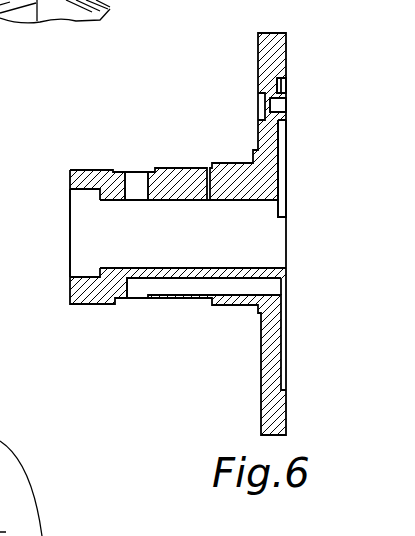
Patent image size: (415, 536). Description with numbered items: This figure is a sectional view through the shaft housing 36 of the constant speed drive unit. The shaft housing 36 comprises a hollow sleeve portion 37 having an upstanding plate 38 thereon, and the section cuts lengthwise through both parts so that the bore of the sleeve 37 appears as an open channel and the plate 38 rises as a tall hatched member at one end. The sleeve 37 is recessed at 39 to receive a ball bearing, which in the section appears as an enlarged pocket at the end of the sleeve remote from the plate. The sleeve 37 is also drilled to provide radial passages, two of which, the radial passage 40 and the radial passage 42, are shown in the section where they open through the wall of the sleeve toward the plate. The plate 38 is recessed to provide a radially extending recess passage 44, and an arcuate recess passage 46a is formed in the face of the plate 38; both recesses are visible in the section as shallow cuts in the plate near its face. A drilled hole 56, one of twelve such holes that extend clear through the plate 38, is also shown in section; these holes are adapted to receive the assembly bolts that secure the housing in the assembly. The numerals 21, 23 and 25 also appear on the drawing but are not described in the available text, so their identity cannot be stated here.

The annular gap 21 is at (137, 298).
The lower lip 23 is at (205, 300).
The lower flange 25 is at (283, 338).
The shaft housing 36 is at (88, 170).
The hollow sleeve portion 37 is at (197, 200).
The upstanding plate 38 is at (286, 37).
The recess 39 is at (70, 270).
The radial passage 40 is at (137, 175).
The radial passage 42 is at (190, 168).
The recess passage 44 is at (283, 150).
The arcuate recess passage 46a is at (286, 78).
The drilled hole 56 is at (286, 102).